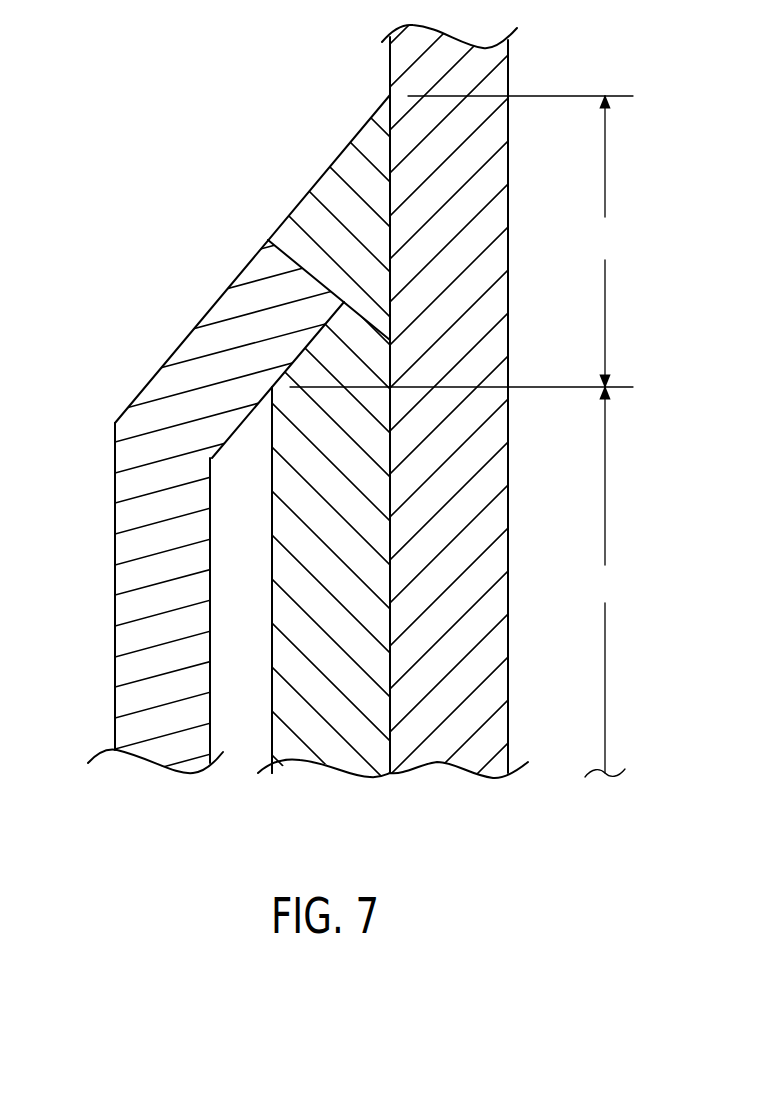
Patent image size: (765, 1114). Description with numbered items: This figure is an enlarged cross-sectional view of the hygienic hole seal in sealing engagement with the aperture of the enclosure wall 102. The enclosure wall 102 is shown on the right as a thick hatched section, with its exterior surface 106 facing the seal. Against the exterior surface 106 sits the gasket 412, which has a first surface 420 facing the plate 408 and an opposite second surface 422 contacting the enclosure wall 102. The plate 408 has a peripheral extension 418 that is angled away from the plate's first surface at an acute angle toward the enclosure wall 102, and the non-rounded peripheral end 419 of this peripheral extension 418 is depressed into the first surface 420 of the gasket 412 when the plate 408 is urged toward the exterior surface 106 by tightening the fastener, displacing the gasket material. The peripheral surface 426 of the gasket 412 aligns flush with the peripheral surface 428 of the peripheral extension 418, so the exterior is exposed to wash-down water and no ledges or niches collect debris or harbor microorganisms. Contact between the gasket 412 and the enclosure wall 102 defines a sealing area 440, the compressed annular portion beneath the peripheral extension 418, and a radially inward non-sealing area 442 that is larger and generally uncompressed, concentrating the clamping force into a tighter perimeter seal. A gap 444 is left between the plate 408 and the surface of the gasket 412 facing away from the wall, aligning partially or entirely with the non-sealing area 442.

The enclosure wall 102 is at (502, 503).
The exterior surface 106 is at (390, 58).
The plate 408 is at (138, 602).
The gasket 412 is at (287, 700).
The peripheral extension 418 is at (192, 293).
The peripheral end 419 is at (357, 290).
The first surface 420 is at (272, 512).
The second surface 422 is at (390, 535).
The peripheral surface 426 is at (325, 170).
The peripheral surface 428 is at (180, 342).
The sealing area 440 is at (461, 241).
The non-sealing area 442 is at (605, 582).
The gap 444 is at (232, 662).